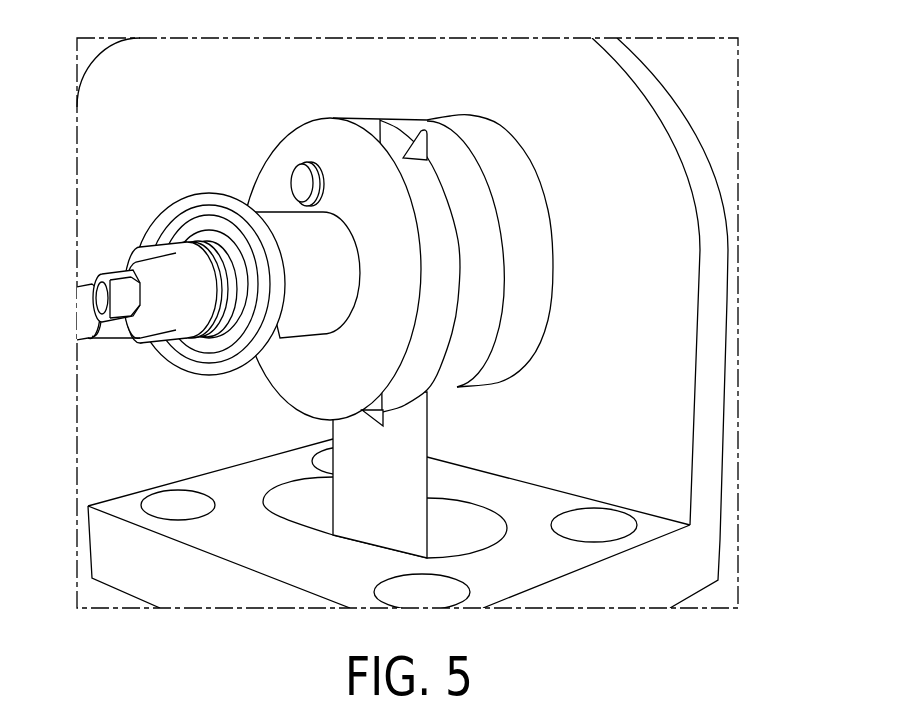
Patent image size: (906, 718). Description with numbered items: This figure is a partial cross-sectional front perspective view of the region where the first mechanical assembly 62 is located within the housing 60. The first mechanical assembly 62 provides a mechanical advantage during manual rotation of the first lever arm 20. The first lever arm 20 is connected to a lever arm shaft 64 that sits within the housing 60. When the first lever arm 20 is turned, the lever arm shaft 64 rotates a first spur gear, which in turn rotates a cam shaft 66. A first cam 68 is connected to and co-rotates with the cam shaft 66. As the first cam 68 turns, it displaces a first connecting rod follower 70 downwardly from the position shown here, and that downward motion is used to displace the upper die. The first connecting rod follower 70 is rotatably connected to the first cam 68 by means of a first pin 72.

The first lever arm 20 is at (737, 152).
The housing 60 is at (708, 210).
The first mechanical assembly 62 is at (677, 67).
The lever arm shaft 64 is at (82, 325).
The cam shaft 66 is at (105, 295).
The first cam 68 is at (488, 148).
The first connecting rod follower 70 is at (407, 480).
The first pin 72 is at (300, 184).